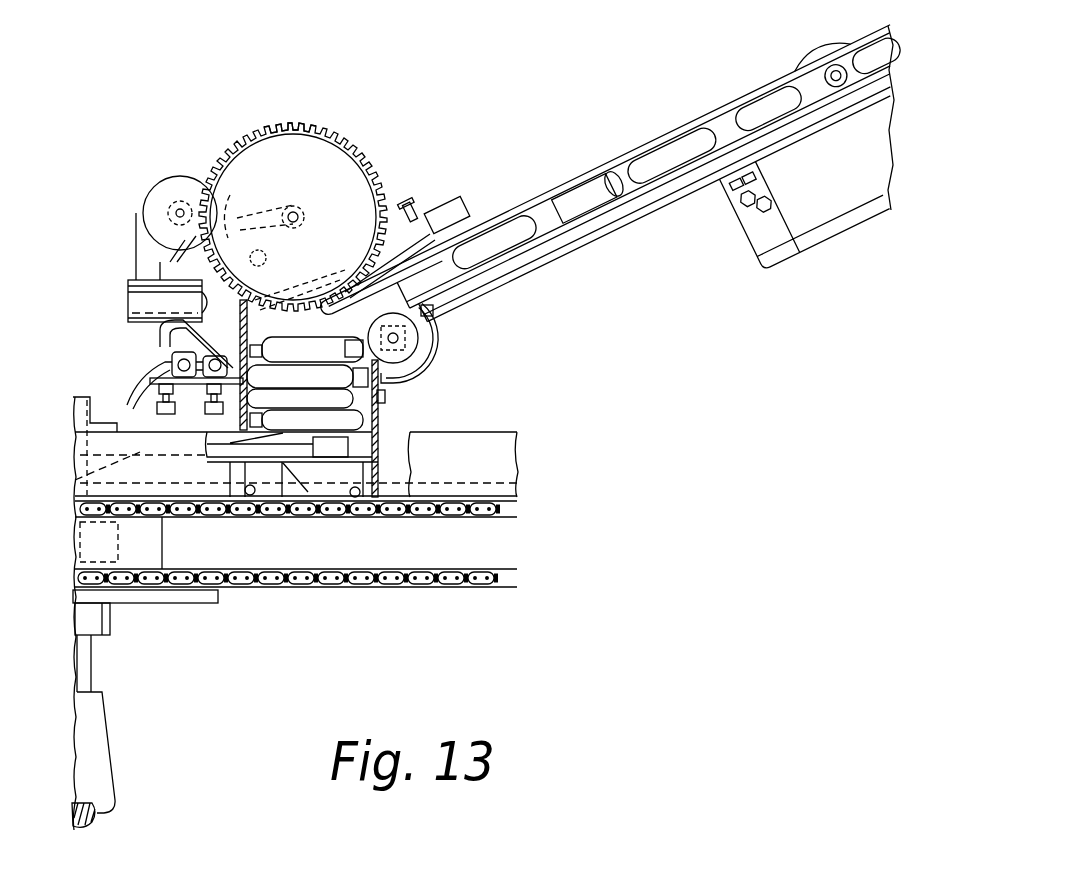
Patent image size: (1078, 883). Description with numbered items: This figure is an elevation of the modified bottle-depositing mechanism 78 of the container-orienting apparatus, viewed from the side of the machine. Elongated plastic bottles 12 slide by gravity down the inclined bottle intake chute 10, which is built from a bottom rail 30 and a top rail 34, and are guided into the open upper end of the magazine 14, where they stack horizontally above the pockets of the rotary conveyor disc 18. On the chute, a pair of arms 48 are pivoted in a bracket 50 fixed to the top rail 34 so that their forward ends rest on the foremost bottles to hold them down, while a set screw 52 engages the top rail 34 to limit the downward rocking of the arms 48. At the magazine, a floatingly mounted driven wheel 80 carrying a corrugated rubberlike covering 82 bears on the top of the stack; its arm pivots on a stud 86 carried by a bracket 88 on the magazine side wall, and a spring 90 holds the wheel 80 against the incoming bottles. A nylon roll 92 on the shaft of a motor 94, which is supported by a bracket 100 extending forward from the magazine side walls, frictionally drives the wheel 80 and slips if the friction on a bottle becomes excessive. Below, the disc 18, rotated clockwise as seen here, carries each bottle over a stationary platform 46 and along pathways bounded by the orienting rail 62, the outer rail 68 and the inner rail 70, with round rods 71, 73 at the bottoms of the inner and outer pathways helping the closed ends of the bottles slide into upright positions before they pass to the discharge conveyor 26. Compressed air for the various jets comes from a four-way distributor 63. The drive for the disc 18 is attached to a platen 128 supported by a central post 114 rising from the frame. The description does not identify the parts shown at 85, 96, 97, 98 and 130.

The bottle intake chute 10 is at (638, 233).
The elongated plastic bottles 12 is at (366, 418).
The magazine 14 is at (243, 330).
The rotary conveyor disc 18 is at (75, 467).
The discharge conveyor 26 is at (410, 596).
The bottom rail 30 is at (585, 158).
The top rail 34 is at (607, 171).
The stationary platform 46 is at (357, 462).
The arms 48 is at (393, 250).
The bracket 50 is at (460, 223).
The set screw 52 is at (410, 217).
The orienting rail 62 is at (308, 481).
The four-way distributor 63 is at (178, 347).
The outer rail 68 is at (82, 449).
The inner rail 70 is at (242, 482).
The rod 71 is at (250, 496).
The rod 73 is at (355, 506).
The bottle depositing mechanism 78 is at (378, 140).
The driven wheel 80 is at (302, 155).
The corrugated rubberlike covering 82 is at (270, 122).
The hose clamp 85 is at (160, 341).
The stud 86 is at (166, 226).
The bracket 88 is at (180, 262).
The spring 90 is at (267, 327).
The roll 92 is at (170, 188).
The motor 94 is at (148, 189).
The pulley housing 96 is at (438, 347).
The pulley 97 is at (397, 343).
The housing bracket 98 is at (434, 330).
The bracket 100 is at (142, 308).
The central post 114 is at (92, 660).
The platen 128 is at (182, 600).
The leg 130 is at (100, 725).